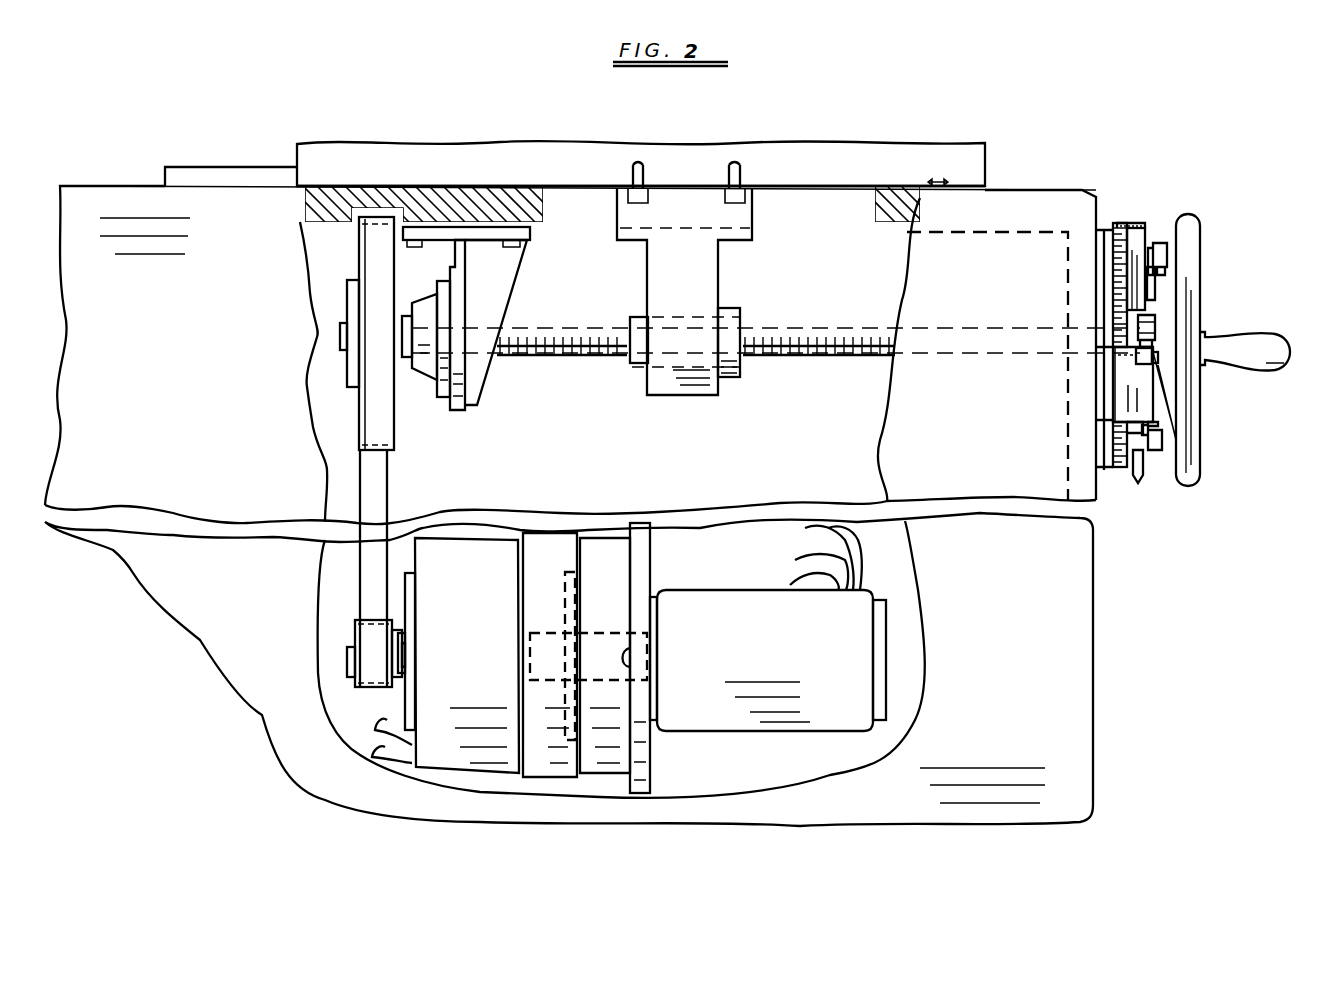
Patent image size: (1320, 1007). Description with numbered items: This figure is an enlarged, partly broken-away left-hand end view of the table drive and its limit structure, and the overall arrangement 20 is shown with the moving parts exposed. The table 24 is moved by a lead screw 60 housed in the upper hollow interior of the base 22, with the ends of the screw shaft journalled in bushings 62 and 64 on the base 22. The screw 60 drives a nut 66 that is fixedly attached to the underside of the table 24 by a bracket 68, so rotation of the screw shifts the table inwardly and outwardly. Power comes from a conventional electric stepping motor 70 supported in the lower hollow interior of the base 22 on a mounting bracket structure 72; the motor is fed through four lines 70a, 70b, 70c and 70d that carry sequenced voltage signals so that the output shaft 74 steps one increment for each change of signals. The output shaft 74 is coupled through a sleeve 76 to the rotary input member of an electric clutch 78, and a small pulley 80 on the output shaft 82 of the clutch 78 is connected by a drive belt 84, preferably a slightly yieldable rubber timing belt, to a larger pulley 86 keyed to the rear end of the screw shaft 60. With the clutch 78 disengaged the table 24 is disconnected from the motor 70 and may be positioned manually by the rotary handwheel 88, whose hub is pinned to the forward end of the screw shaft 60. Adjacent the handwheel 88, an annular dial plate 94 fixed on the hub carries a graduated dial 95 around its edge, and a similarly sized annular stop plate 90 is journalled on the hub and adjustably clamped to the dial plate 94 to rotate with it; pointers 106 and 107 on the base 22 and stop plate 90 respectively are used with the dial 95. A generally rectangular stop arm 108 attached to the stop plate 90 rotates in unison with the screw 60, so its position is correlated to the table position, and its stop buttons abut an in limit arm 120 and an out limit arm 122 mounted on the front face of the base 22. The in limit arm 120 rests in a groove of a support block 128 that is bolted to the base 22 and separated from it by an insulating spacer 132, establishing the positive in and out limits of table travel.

The table saw assembly 20 is at (1122, 634).
The base 22 is at (1097, 557).
The table 24 is at (740, 143).
The lead screw 60 is at (823, 335).
The bushing 62 is at (1075, 368).
The bushing 64 is at (423, 306).
The nut 66 is at (742, 313).
The bracket 68 is at (718, 262).
The electric stepping motor 70 is at (724, 732).
The line 70a is at (795, 568).
The line 70b is at (790, 545).
The line 70c is at (802, 521).
The line 70d is at (853, 557).
The mounting bracket structure 72 is at (650, 757).
The output shaft 74 is at (640, 642).
The sleeve 76 is at (608, 633).
The electric clutch 78 is at (488, 540).
The small pulley 80 is at (357, 620).
The output shaft 82 is at (347, 674).
The drive belt 84 is at (388, 481).
The larger pulley 86 is at (395, 408).
The rotary handwheel 88 is at (1200, 232).
The stop plate 90 is at (1148, 232).
The dial plate 94 is at (1122, 222).
The graduated dial 95 is at (1123, 470).
The pointer 106 is at (1113, 222).
The pointer 107 is at (1133, 226).
The stop arm 108 is at (1143, 328).
The in limit arm 120 is at (1138, 352).
The out limit arm 122 is at (1150, 455).
The support block 128 is at (1122, 398).
The insulating spacer 132 is at (1105, 385).